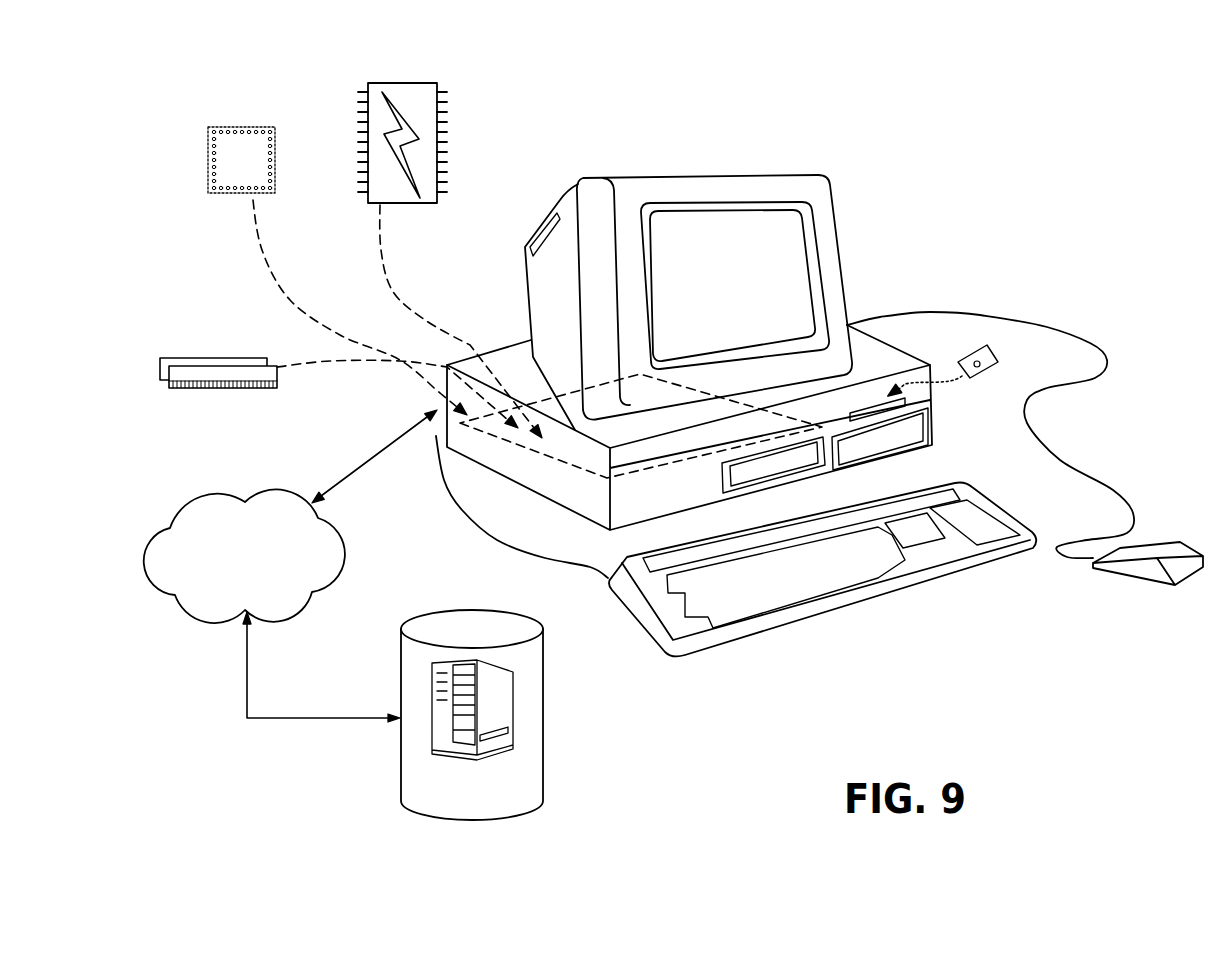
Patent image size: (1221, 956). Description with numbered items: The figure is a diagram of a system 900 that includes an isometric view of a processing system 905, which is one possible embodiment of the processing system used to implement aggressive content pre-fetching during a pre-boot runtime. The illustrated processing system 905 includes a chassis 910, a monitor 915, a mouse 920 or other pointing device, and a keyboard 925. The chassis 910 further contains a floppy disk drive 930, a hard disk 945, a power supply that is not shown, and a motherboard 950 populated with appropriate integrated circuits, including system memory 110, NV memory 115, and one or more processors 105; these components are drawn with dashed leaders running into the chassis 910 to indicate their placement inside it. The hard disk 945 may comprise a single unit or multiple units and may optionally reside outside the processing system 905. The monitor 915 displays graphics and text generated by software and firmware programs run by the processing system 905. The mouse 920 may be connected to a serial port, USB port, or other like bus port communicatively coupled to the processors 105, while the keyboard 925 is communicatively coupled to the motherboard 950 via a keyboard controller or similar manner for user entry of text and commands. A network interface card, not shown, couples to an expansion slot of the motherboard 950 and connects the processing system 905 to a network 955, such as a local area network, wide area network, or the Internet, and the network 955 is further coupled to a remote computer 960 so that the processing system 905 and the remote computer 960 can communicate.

The system 900 is at (88, 95).
The processor 105 is at (278, 134).
The NV memory 115 is at (433, 83).
The system memory 110 is at (201, 358).
The processing system 905 is at (960, 144).
The chassis 910 is at (728, 425).
The monitor 915 is at (833, 207).
The mouse 920 is at (1143, 576).
The keyboard 925 is at (926, 592).
The floppy disk drive 930 is at (932, 412).
The hard disk 945 is at (930, 433).
The motherboard 950 is at (527, 450).
The network 955 is at (258, 494).
The remote computer 960 is at (546, 752).